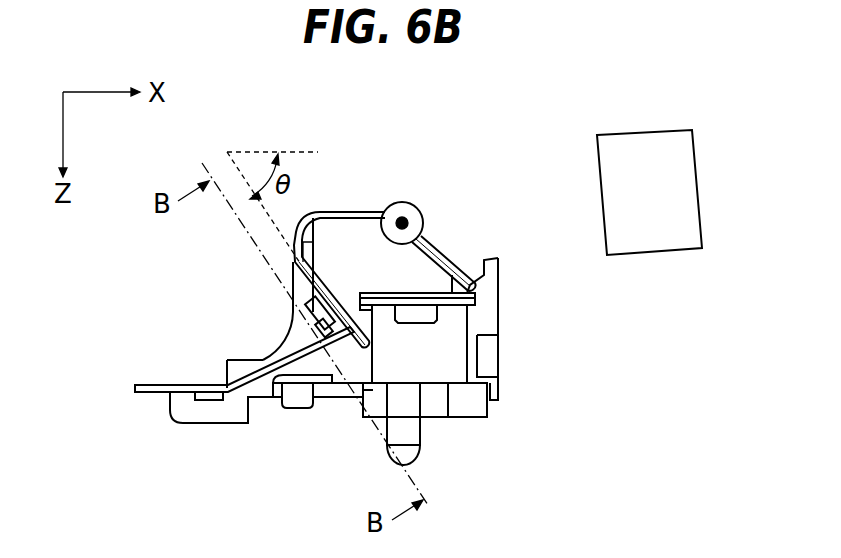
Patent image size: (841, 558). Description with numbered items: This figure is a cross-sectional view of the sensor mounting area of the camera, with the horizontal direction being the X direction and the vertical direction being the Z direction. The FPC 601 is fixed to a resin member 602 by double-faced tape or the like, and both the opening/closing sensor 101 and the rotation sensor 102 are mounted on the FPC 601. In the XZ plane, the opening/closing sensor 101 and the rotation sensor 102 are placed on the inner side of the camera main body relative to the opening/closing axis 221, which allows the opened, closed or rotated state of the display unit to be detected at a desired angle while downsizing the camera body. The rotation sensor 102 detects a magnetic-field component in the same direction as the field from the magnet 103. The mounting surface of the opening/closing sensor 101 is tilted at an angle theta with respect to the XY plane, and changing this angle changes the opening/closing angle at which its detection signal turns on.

The opening/closing sensor 101 is at (296, 318).
The rotation sensor 102 is at (430, 313).
The magnet 103 is at (640, 245).
The opening/closing axis 221 is at (410, 206).
The FPC 601 is at (440, 249).
The resin member 602 is at (358, 228).